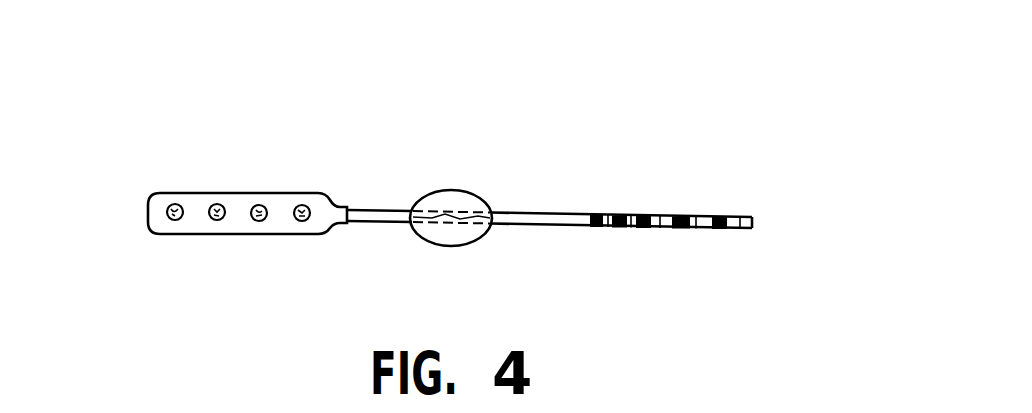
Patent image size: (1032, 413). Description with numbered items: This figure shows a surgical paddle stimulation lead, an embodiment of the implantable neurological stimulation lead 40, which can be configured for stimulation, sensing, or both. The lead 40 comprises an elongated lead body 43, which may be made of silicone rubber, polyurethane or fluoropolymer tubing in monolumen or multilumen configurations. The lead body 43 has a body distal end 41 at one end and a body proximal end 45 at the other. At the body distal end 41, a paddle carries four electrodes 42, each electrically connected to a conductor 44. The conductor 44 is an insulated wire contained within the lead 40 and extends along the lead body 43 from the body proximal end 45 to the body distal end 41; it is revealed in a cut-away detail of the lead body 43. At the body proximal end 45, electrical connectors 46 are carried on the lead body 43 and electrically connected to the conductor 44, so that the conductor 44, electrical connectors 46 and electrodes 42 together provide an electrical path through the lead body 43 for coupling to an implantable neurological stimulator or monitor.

The neurological stimulation lead 40 is at (533, 96).
The body distal end 41 is at (123, 253).
The electrode 42 is at (302, 204).
The lead body 43 is at (527, 221).
The conductor 44 is at (442, 213).
The body proximal end 45 is at (777, 292).
The electrical connector 46 is at (598, 215).